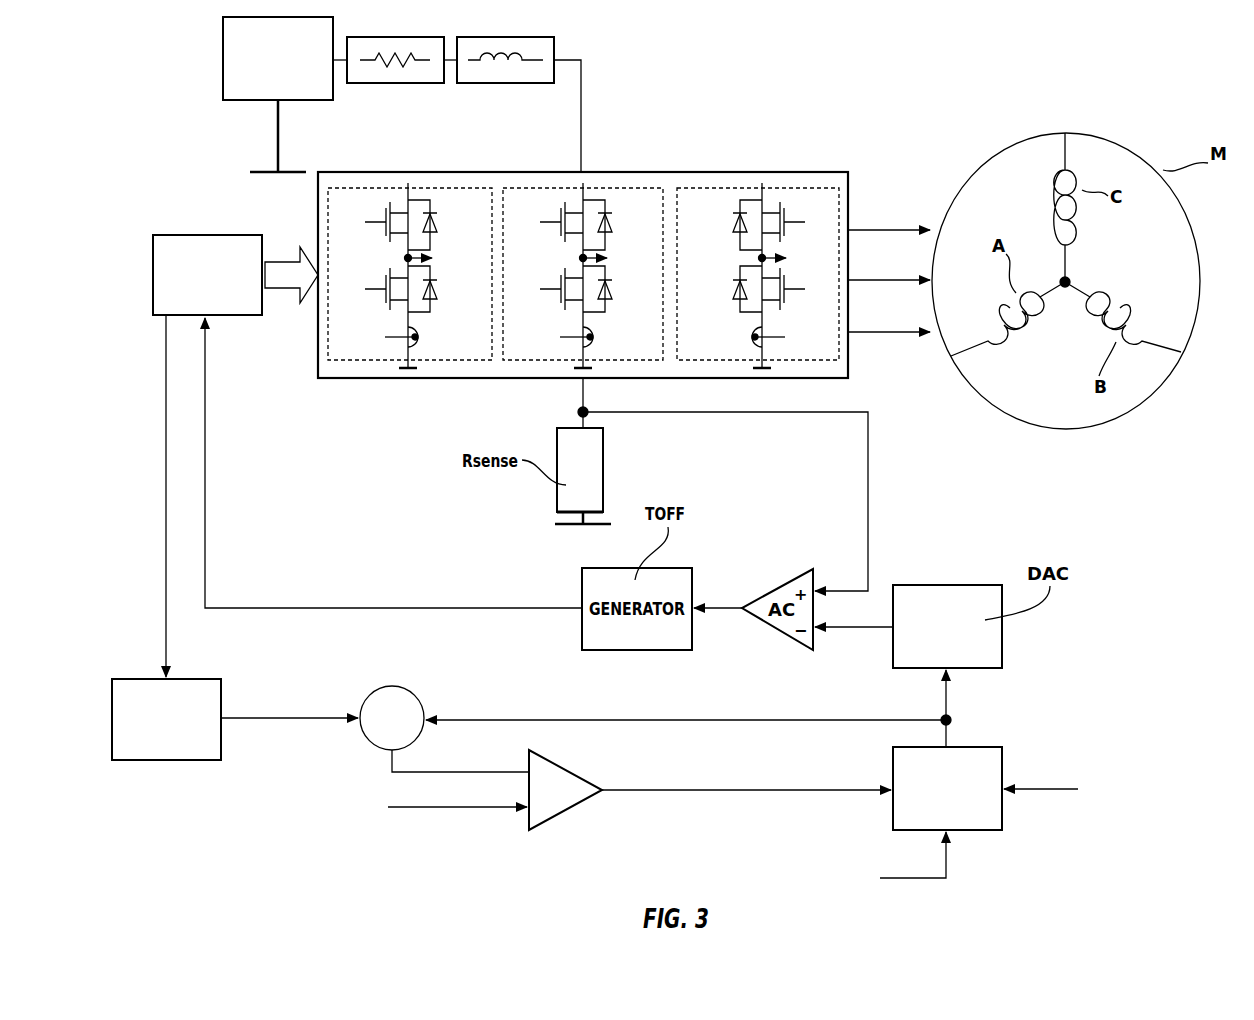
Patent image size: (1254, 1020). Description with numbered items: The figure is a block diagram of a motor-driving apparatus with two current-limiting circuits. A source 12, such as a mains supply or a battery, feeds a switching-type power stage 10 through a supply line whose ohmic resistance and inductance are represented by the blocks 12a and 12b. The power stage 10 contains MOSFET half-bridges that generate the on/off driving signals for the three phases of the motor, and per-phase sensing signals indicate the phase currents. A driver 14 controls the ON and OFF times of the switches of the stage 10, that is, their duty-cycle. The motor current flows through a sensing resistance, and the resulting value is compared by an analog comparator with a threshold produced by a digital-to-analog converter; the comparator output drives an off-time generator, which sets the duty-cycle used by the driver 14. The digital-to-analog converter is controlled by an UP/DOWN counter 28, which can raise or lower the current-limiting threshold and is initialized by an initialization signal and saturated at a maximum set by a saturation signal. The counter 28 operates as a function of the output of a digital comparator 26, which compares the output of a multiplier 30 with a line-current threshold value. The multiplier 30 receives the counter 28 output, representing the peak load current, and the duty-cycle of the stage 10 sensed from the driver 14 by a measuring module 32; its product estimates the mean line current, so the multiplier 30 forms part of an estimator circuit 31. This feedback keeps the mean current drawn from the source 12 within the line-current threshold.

The power stage 10 is at (690, 170).
The source 12 is at (222, 30).
The ohmic resistance block 12a is at (400, 84).
The inductance block 12b is at (505, 84).
The driver 14 is at (196, 234).
The digital comparator 26 is at (565, 815).
The UP/DOWN counter 28 is at (972, 746).
The multiplier 30 is at (392, 686).
The estimator circuit 31 is at (342, 688).
The measuring module 32 is at (166, 762).